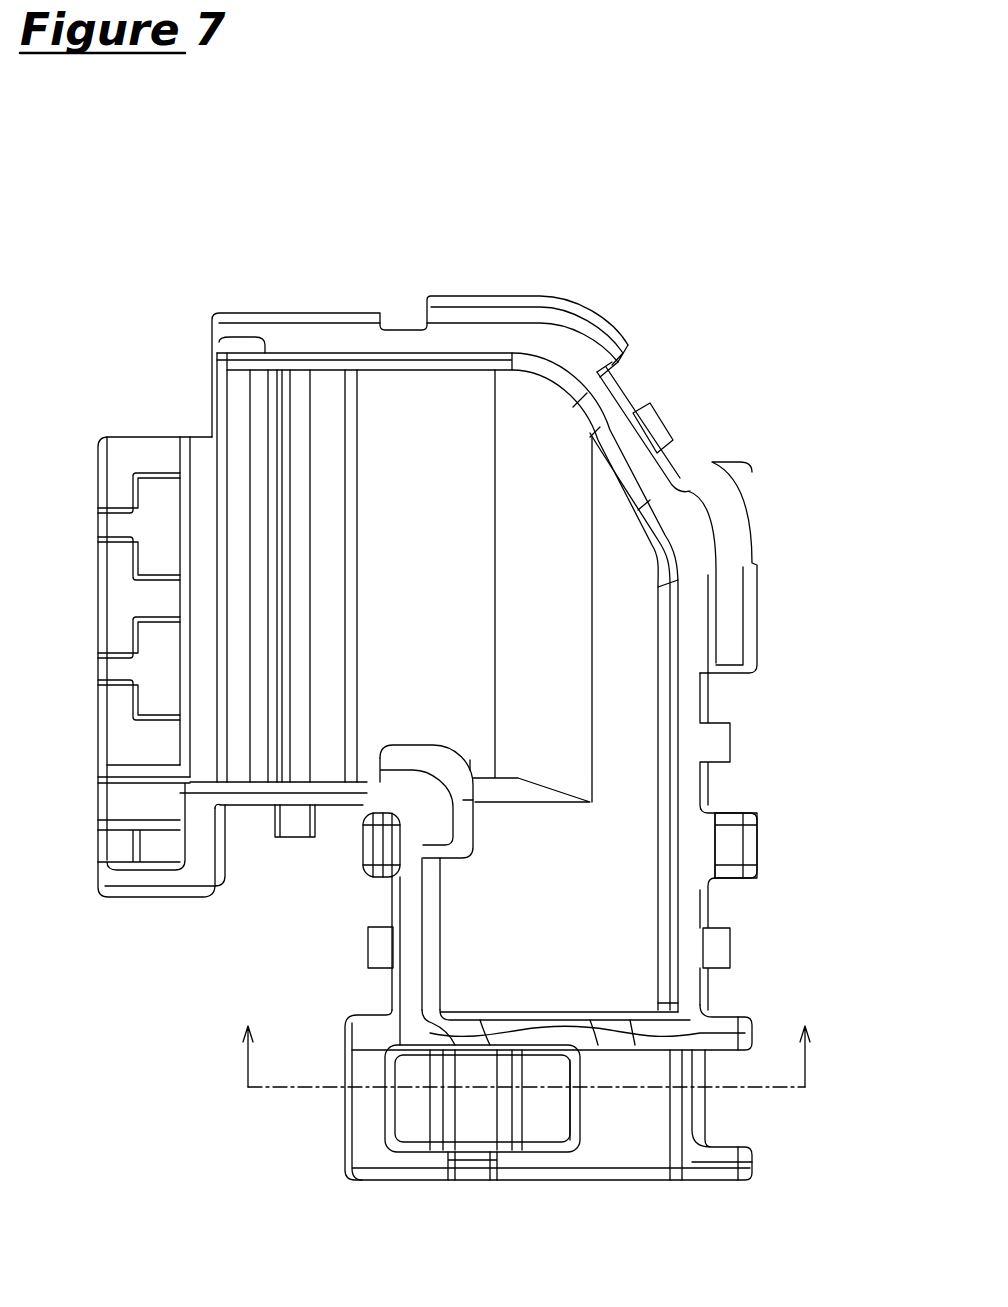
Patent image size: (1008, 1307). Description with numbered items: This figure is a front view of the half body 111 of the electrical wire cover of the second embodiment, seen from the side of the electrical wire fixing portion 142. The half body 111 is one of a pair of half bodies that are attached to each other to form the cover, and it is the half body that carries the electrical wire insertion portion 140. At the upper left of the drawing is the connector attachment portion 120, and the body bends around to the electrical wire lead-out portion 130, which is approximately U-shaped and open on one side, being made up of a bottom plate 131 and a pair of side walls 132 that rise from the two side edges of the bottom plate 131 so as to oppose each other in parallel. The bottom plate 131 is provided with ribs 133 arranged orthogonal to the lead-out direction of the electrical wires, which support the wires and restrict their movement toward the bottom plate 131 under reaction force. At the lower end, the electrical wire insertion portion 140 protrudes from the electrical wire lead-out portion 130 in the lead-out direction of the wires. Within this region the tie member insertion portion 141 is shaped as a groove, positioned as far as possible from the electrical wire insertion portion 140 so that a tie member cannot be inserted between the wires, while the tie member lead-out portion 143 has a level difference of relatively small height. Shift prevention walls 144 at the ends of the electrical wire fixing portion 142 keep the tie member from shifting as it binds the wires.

The half body 111 is at (440, 195).
The connector attachment portion 120 is at (148, 388).
The electrical wire lead-out portion 130 is at (774, 913).
The bottom plate 131 is at (600, 933).
The side wall 132 is at (408, 930).
The rib 133 is at (550, 1033).
The electrical wire insertion portion 140 is at (623, 1147).
The tie member insertion portion 141 is at (397, 1103).
The electrical wire fixing portion 142 is at (648, 1107).
The tie member lead-out portion 143 is at (523, 1100).
The shift prevention wall 144 is at (738, 1032).